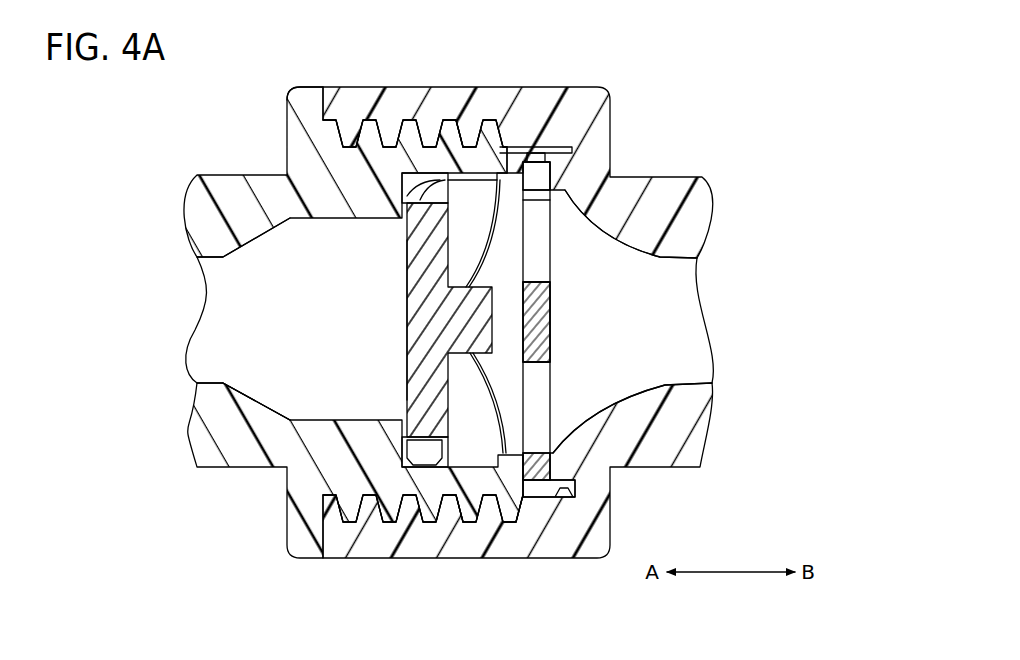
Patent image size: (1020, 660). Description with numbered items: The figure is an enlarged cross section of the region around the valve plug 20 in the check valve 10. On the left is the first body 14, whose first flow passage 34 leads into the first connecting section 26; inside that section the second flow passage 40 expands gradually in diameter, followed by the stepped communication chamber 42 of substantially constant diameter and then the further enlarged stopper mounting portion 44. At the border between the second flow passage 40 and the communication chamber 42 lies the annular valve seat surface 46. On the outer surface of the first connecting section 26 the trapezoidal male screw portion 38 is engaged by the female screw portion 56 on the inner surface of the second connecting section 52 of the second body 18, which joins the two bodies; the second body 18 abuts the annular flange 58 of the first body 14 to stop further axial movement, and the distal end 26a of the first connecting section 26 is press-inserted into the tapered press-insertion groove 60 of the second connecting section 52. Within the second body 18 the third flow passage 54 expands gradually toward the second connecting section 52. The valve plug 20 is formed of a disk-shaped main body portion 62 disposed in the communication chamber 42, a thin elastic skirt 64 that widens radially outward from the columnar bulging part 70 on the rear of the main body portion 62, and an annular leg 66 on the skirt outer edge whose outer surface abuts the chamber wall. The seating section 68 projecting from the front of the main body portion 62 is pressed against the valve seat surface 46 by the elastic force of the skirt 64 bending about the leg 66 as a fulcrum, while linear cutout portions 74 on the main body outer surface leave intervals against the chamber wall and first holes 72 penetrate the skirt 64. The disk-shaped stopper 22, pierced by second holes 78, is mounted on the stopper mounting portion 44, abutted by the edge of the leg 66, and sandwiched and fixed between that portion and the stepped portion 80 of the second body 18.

The check valve 10 is at (655, 63).
The first body 14 is at (250, 168).
The second body 18 is at (690, 170).
The valve plug 20 is at (397, 346).
The stopper 22 is at (557, 322).
The first connecting section 26 is at (488, 160).
The distal end of first connecting section 26a is at (578, 150).
The first flow passage 34 is at (202, 319).
The male screw portion 38 is at (425, 508).
The second flow passage 40 is at (280, 380).
The communication chamber 42 is at (505, 278).
The stopper mounting portion 44 is at (550, 477).
The valve seat surface 46 is at (437, 187).
The second connecting section 52 is at (348, 93).
The third flow passage 54 is at (683, 325).
The female screw portion 56 is at (364, 512).
The annular flange 58 is at (308, 95).
The press-insertion groove 60 is at (532, 150).
The main body portion 62 is at (407, 316).
The skirt 64 is at (497, 433).
The leg 66 is at (504, 484).
The seating section 68 is at (402, 212).
The bulging part 70 is at (535, 346).
The first holes 72 is at (490, 394).
The cutout portions 74 is at (465, 150).
The second holes 78 is at (543, 259).
The stepped portion 80 is at (498, 210).